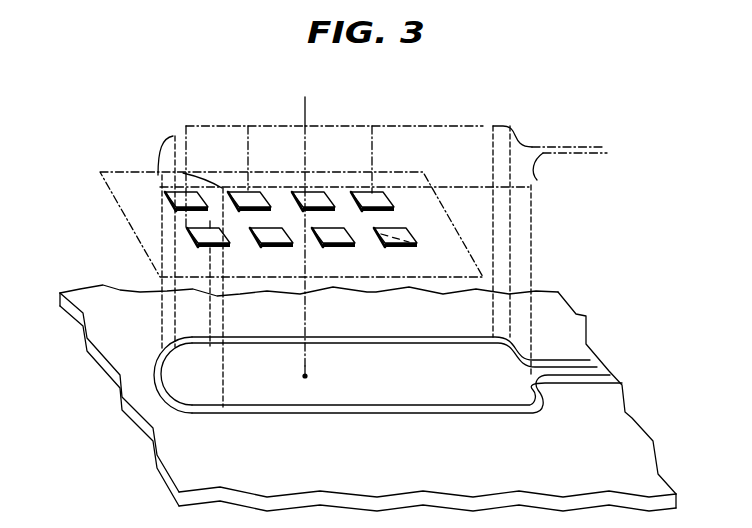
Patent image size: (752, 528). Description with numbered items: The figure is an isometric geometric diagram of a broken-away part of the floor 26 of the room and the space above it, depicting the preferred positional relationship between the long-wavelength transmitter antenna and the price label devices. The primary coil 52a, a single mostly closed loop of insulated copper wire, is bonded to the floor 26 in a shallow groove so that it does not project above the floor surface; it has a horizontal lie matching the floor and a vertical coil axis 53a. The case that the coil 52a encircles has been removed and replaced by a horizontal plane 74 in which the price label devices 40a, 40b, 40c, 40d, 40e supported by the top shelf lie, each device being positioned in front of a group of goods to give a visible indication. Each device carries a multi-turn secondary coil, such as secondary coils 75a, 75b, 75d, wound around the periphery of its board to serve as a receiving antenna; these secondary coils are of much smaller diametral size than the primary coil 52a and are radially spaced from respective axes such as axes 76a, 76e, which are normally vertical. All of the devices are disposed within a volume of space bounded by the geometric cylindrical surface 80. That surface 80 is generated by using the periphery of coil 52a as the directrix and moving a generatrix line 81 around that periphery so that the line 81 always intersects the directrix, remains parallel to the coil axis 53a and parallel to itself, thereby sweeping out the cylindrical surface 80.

The floor 26 is at (163, 422).
The price label device 40a is at (196, 244).
The price label device 40b is at (272, 247).
The price label device 40c is at (336, 248).
The price label device 40d is at (398, 249).
The price label device 40e is at (170, 207).
The primary coil 52a is at (360, 415).
The coil axis 53a is at (306, 106).
The horizontal plane 74 is at (344, 224).
The secondary coil 75a is at (205, 250).
The secondary coil 75b is at (285, 249).
The secondary coil 75d is at (388, 249).
The coil axis 76a is at (210, 221).
The coil axis 76e is at (186, 150).
The geometric cylindrical surface 80 is at (182, 129).
The generatrix line 81 is at (166, 186).